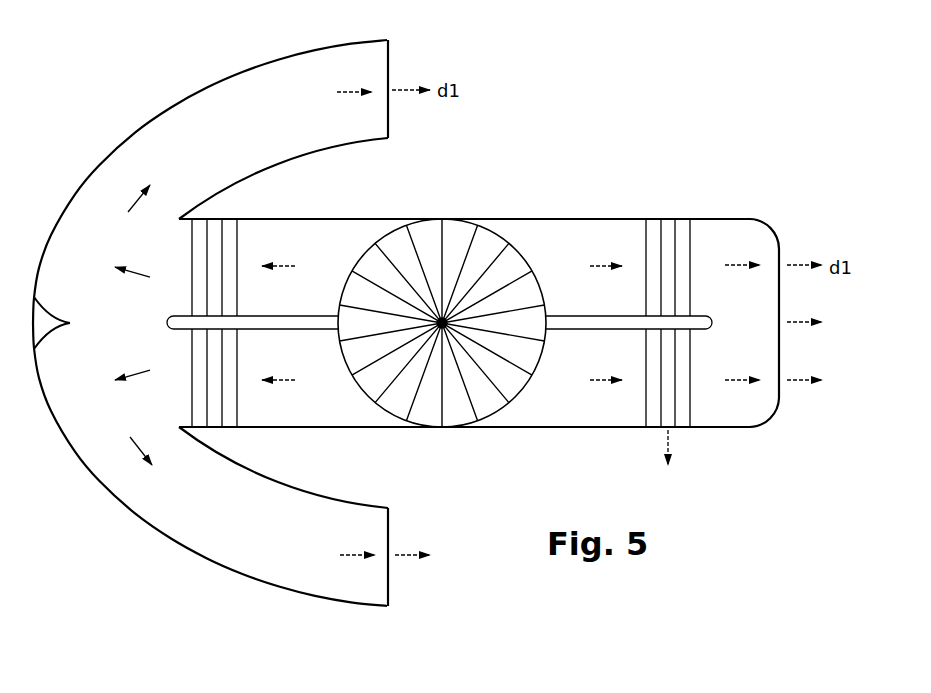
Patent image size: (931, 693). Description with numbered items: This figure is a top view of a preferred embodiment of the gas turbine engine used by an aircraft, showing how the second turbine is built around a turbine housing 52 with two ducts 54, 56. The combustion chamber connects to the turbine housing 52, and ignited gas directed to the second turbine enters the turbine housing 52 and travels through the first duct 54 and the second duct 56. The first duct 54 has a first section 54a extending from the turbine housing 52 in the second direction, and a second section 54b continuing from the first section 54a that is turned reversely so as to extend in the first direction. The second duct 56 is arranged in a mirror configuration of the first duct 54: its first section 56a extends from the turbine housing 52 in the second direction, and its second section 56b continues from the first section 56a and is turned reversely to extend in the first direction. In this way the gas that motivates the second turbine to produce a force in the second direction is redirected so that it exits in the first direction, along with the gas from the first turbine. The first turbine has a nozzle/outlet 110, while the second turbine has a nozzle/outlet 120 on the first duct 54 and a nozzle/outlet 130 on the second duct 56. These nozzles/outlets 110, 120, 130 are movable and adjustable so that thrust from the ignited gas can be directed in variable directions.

The turbine housing 52 is at (312, 218).
The first duct 54 is at (193, 92).
The first section of the first duct 54a is at (53, 235).
The second section of the first duct 54b is at (313, 51).
The second duct 56 is at (158, 537).
The first section of the second duct 56a is at (45, 385).
The second section of the second duct 56b is at (318, 596).
The nozzle/outlet 110 is at (780, 352).
The nozzle/outlet 120 is at (390, 58).
The nozzle/outlet 130 is at (391, 575).